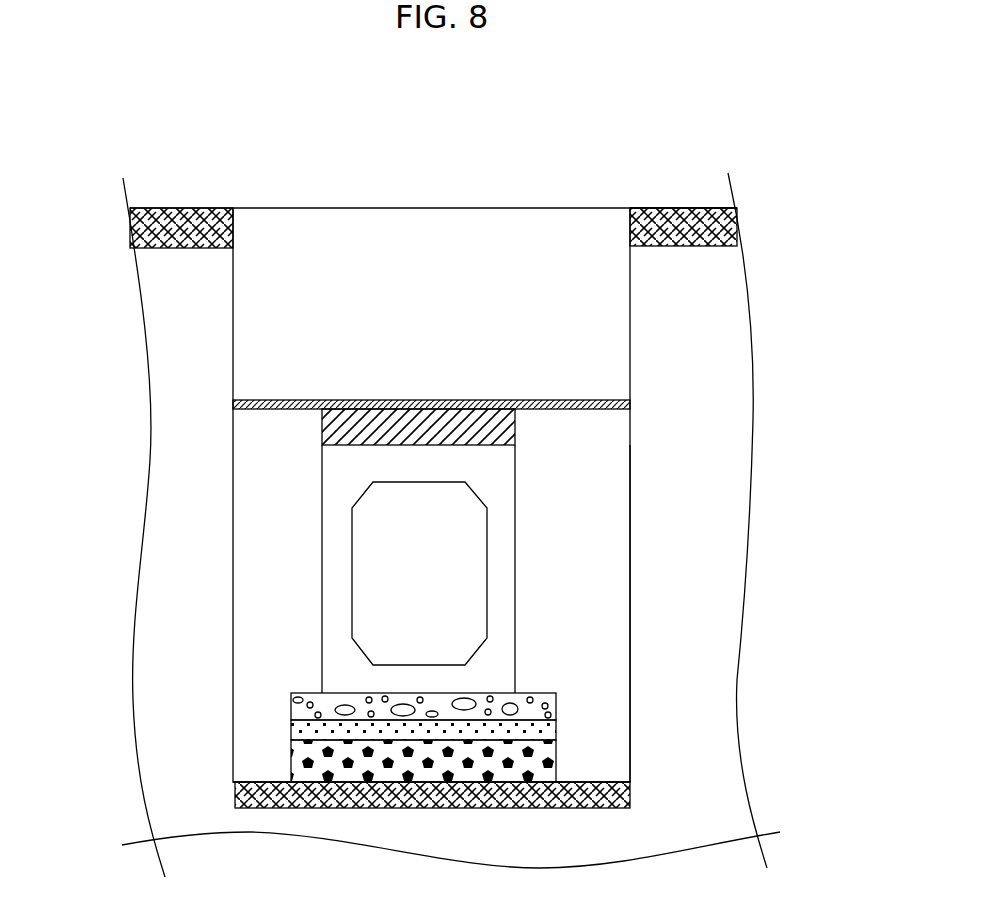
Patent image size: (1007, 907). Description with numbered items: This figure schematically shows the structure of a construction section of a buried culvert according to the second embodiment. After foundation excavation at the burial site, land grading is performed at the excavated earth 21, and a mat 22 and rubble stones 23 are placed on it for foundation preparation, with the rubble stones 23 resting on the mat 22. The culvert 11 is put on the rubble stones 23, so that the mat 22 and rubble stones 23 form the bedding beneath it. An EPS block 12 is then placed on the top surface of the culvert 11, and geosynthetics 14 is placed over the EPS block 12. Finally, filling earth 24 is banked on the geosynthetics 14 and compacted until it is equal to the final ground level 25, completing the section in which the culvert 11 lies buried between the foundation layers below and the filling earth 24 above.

The filling earth 24 is at (607, 338).
The final ground level 25 is at (675, 207).
The excavated earth 21 is at (595, 782).
The geosynthetics 14 is at (233, 400).
The EPS block 12 is at (330, 430).
The culvert 11 is at (332, 565).
The rubble stones 23 is at (291, 702).
The mat 22 is at (291, 752).